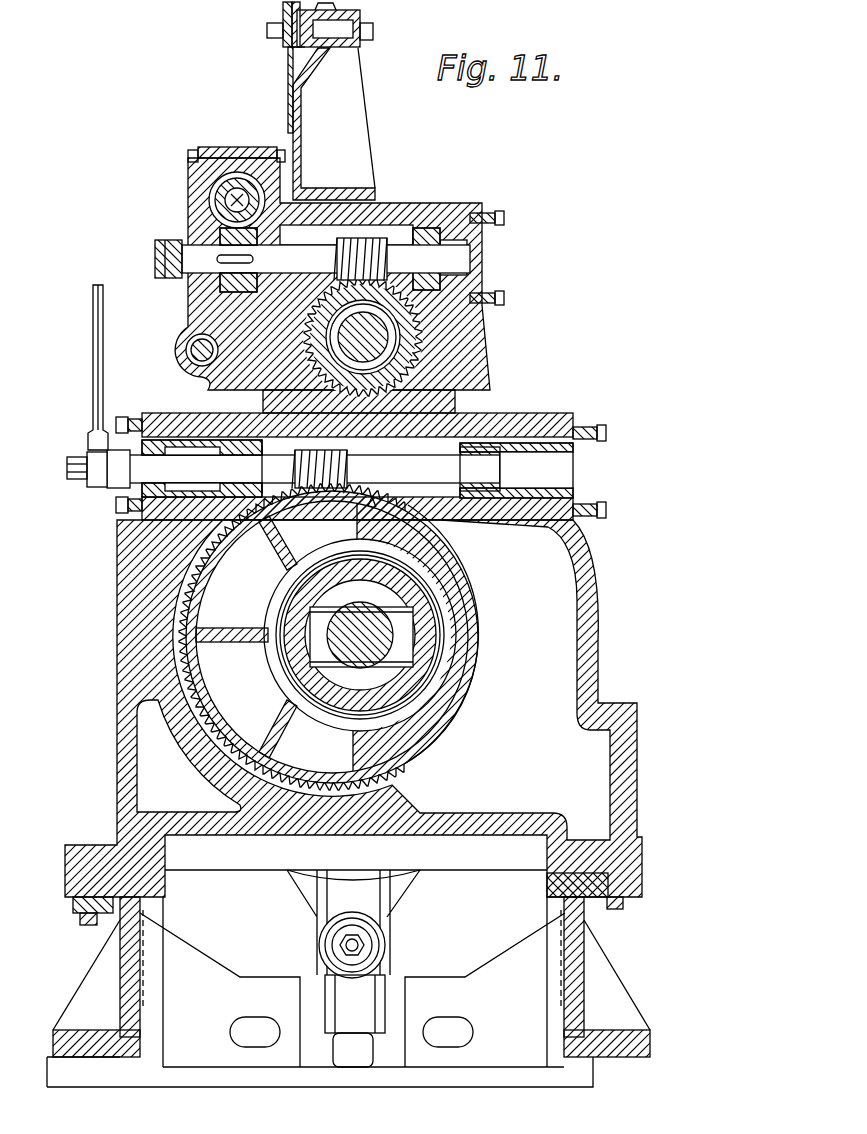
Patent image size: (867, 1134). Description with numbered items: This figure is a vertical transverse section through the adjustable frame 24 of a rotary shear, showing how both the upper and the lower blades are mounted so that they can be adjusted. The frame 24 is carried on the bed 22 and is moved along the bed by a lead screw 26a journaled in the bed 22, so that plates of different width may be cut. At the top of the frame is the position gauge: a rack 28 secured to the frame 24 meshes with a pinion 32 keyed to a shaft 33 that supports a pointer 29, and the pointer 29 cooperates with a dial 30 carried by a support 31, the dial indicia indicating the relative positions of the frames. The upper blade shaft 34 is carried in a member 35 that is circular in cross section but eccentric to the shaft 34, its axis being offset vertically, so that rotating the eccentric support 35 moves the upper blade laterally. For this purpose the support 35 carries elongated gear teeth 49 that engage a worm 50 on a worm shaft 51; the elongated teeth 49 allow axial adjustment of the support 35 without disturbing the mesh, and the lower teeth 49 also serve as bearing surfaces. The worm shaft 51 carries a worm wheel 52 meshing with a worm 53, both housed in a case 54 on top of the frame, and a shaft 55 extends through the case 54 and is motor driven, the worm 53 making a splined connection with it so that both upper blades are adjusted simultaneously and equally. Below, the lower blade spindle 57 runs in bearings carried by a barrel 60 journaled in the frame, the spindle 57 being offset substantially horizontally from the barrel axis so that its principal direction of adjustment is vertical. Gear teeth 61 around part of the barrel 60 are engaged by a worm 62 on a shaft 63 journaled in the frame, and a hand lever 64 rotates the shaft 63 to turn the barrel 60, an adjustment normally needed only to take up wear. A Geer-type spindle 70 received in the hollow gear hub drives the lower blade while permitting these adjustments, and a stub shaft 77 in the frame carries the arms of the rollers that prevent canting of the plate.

The bed 22 is at (294, 1082).
The frame 24 is at (597, 604).
The lead screw 26a is at (372, 947).
The rack 28 is at (267, 31).
The pointer 29 is at (283, 14).
The dial 30 is at (287, 83).
The support 31 is at (342, 108).
The pinion 32 is at (292, 52).
The shaft 33 is at (352, 30).
The shaft 34 is at (422, 343).
The eccentric support 35 is at (395, 333).
The gear teeth 49 is at (388, 350).
The worm 50 is at (376, 240).
The worm shaft 51 is at (433, 550).
The worm wheel 52 is at (218, 236).
The worm 53 is at (230, 206).
The case 54 is at (230, 150).
The shaft 55 is at (222, 188).
The spindle 57 is at (440, 650).
The barrel 60 is at (236, 657).
The gear teeth 61 is at (378, 508).
The worm 62 is at (347, 469).
The shaft 63 is at (135, 470).
The hand lever 64 is at (93, 351).
The spindle 70 is at (385, 633).
The stub shaft 77 is at (191, 351).